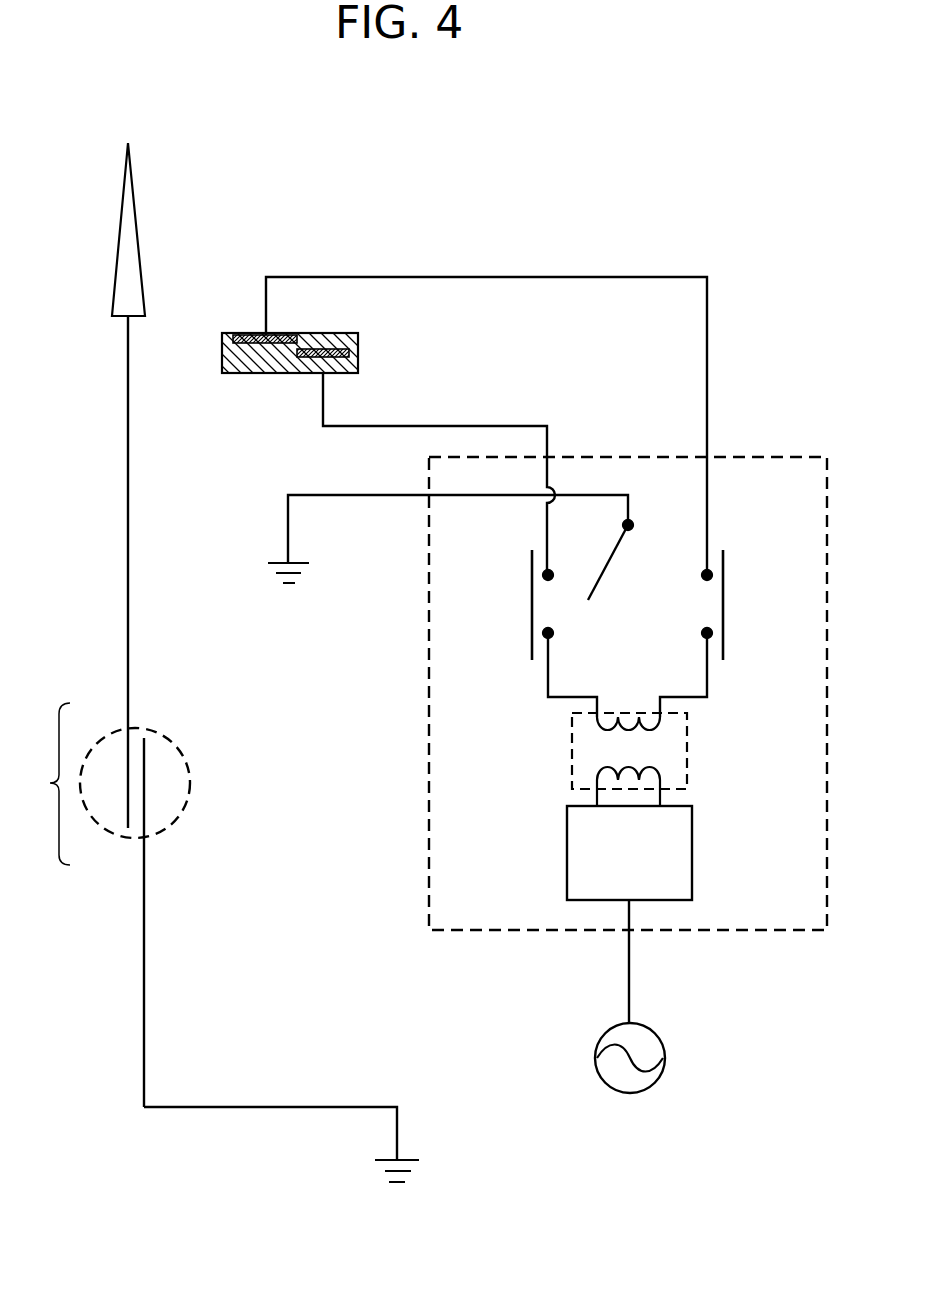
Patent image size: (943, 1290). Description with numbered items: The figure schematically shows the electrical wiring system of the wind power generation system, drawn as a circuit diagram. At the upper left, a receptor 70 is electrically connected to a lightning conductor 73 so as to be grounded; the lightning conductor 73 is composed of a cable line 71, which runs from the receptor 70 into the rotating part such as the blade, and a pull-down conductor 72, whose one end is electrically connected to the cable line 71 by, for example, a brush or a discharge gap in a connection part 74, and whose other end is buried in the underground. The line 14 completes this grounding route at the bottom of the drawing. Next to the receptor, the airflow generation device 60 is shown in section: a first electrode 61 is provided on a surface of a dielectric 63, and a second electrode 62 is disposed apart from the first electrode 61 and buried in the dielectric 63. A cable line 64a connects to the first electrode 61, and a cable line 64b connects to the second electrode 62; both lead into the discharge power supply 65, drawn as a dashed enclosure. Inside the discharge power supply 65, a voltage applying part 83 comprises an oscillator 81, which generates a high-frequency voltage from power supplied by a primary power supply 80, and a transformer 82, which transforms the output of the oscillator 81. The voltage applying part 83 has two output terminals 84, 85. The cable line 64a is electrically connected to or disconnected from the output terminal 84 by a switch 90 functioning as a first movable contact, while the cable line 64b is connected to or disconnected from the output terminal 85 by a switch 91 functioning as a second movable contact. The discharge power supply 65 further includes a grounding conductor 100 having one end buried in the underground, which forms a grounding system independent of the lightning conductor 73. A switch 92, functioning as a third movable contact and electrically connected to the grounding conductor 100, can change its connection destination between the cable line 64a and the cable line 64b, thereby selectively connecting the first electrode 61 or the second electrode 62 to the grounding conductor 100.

The ground line 14 is at (142, 1027).
The airflow generation device 60 is at (288, 355).
The first electrode 61 is at (250, 333).
The second electrode 62 is at (352, 353).
The dielectric 63 is at (281, 377).
The cable line 64a is at (708, 368).
The cable line 64b is at (476, 427).
The discharge power supply 65 is at (752, 455).
The receptor 70 is at (125, 262).
The cable line 71 is at (128, 718).
The pull-down conductor 72 is at (144, 854).
The lightning conductor 73 is at (45, 784).
The connection part 74 is at (188, 734).
The primary power supply 80 is at (630, 1093).
The oscillator 81 is at (694, 853).
The transformer 82 is at (688, 745).
The voltage applying part 83 is at (540, 808).
The output terminal 84 is at (708, 676).
The output terminal 85 is at (548, 676).
The switch 90 is at (725, 600).
The switch 91 is at (530, 600).
The switch 92 is at (605, 572).
The grounding conductor 100 is at (377, 497).